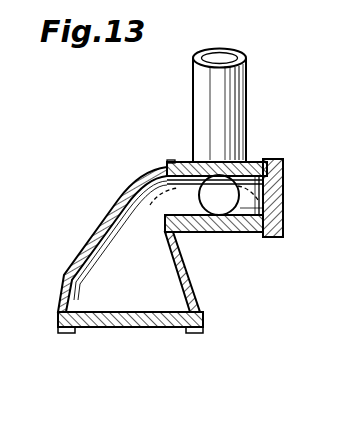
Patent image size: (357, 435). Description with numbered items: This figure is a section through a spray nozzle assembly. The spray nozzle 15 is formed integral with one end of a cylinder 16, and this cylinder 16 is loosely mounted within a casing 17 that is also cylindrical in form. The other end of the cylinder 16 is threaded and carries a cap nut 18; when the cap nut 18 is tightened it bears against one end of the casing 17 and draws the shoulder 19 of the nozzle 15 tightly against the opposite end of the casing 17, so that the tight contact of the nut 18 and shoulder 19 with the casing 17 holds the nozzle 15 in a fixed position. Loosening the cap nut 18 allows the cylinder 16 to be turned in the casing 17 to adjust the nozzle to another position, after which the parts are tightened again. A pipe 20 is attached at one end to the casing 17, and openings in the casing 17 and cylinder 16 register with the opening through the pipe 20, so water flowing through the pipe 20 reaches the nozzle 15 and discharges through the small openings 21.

The spray nozzle 15 is at (96, 238).
The cylinder 16 is at (199, 233).
The casing 17 is at (240, 233).
The cap nut 18 is at (284, 178).
The shoulder 19 is at (178, 162).
The pipe 20 is at (204, 90).
The small openings 21 is at (116, 327).